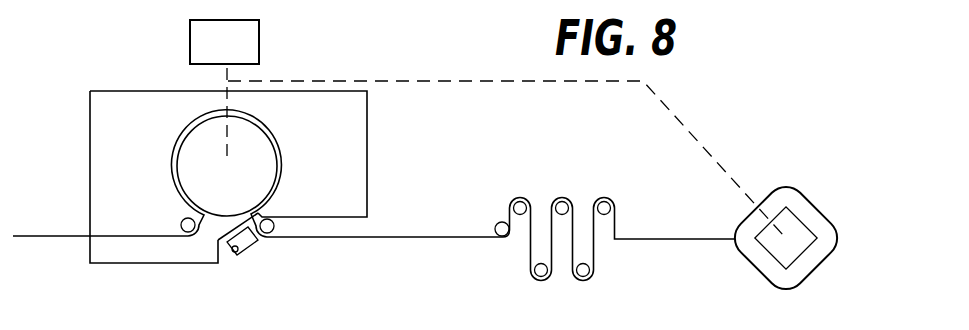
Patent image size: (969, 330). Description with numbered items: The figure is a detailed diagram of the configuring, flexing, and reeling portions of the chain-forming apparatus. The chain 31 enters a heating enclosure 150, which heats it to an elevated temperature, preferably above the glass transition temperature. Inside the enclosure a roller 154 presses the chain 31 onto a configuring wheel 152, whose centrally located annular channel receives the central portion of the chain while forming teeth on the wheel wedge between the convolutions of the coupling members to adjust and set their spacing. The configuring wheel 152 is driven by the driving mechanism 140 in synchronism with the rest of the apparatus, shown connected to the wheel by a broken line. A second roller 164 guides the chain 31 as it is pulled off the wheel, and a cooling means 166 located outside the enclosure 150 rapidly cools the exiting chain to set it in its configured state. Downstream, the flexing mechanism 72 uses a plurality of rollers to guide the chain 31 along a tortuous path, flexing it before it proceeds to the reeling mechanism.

The chain 31 is at (53, 236).
The flexing mechanism 72 is at (578, 185).
The driving mechanism 140 is at (243, 47).
The heating enclosure 150 is at (130, 107).
The configuring wheel 152 is at (252, 160).
The roller 154 is at (181, 225).
The roller 164 is at (270, 233).
The cooling means 166 is at (247, 253).